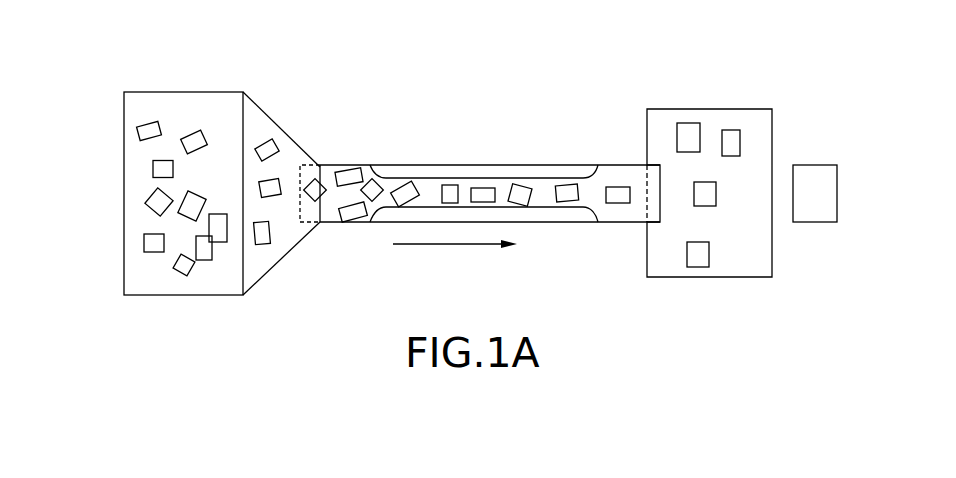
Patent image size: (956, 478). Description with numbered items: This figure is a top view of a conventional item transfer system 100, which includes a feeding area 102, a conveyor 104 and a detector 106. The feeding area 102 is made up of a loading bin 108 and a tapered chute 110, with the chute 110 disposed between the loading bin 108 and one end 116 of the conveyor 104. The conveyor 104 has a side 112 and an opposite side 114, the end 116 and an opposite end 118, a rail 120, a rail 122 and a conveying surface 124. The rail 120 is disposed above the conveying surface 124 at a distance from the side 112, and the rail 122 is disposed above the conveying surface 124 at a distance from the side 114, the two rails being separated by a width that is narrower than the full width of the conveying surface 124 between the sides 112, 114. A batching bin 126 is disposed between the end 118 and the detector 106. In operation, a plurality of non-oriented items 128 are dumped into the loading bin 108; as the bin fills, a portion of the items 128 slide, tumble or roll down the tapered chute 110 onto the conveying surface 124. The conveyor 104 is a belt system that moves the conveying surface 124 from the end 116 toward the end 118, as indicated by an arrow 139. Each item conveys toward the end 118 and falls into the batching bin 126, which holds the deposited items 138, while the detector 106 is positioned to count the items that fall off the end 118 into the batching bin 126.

The conventional item transfer system 100 is at (611, 73).
The feeding area 102 is at (200, 316).
The conveyor 104 is at (535, 165).
The detector 106 is at (816, 165).
The loading bin 108 is at (180, 92).
The tapered chute 110 is at (266, 112).
The side 112 is at (452, 165).
The side 114 is at (370, 213).
The end 116 is at (318, 160).
The end 118 is at (661, 193).
The rail 120 is at (558, 165).
The rail 122 is at (390, 165).
The conveying surface 124 is at (609, 170).
The batching bin 126 is at (747, 109).
The plurality of non-oriented items 128 is at (139, 130).
The deposited items 138 is at (690, 123).
The arrow 139 is at (438, 246).